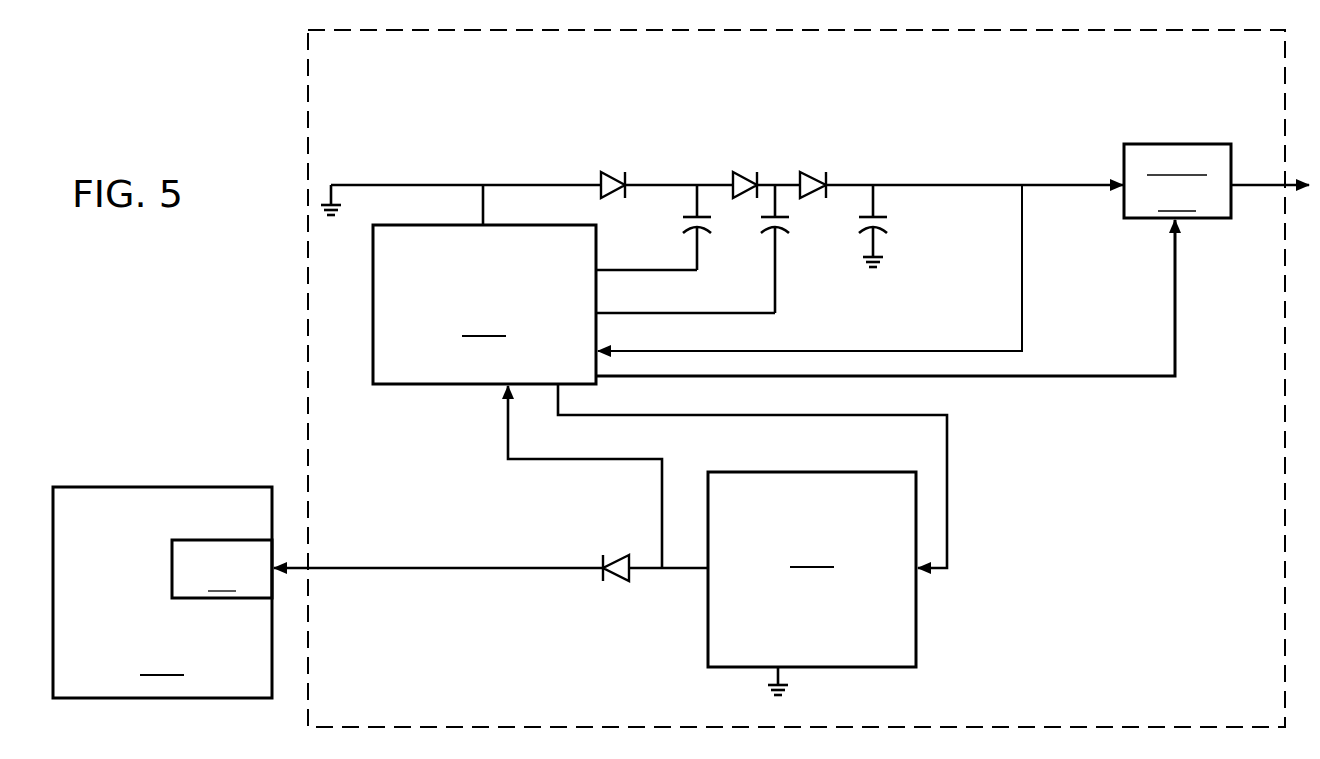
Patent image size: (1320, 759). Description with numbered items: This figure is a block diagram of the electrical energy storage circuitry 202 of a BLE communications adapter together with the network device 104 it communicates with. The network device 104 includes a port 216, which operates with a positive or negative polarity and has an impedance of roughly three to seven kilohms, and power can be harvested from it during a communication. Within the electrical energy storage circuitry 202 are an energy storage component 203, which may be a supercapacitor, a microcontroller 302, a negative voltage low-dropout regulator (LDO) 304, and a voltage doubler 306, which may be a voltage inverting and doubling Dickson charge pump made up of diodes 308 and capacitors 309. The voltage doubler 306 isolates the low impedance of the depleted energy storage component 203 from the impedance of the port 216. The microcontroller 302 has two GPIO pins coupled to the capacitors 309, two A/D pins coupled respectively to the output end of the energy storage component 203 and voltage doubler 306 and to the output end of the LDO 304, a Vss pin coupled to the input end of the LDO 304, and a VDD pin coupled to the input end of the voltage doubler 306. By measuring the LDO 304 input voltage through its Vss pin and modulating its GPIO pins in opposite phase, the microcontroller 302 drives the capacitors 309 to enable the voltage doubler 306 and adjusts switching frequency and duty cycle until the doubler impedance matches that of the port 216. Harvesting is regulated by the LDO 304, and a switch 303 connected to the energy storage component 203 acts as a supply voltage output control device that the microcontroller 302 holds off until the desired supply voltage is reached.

The network device 104 is at (162, 592).
The port 216 is at (222, 569).
The electrical energy storage circuitry 202 is at (1034, 701).
The energy storage component 203 is at (903, 219).
The microcontroller 302 is at (697, 376).
The switch 303 is at (952, 260).
The negative voltage low-dropout regulator (LDO) 304 is at (595, 583).
The voltage doubler 306 is at (653, 158).
The diodes 308 is at (602, 172).
The capacitors 309 is at (762, 233).